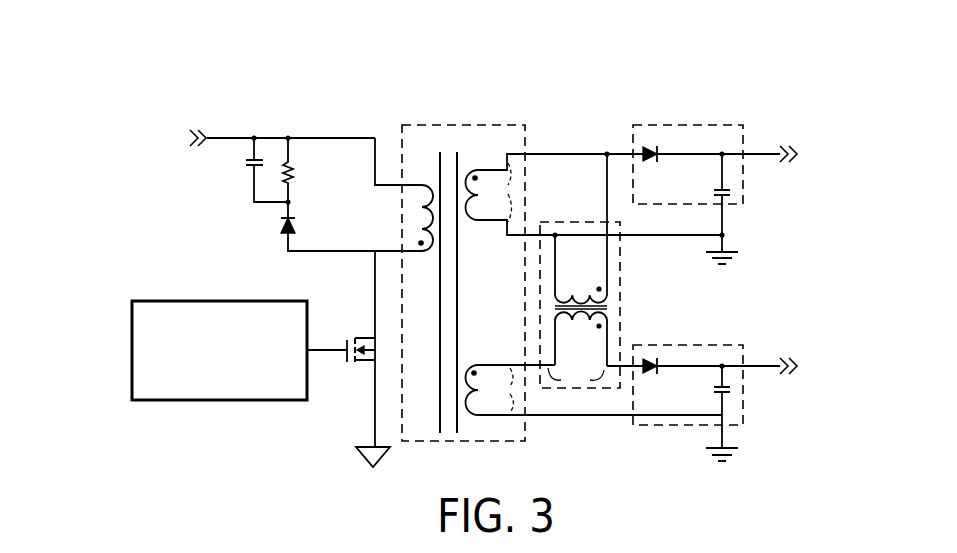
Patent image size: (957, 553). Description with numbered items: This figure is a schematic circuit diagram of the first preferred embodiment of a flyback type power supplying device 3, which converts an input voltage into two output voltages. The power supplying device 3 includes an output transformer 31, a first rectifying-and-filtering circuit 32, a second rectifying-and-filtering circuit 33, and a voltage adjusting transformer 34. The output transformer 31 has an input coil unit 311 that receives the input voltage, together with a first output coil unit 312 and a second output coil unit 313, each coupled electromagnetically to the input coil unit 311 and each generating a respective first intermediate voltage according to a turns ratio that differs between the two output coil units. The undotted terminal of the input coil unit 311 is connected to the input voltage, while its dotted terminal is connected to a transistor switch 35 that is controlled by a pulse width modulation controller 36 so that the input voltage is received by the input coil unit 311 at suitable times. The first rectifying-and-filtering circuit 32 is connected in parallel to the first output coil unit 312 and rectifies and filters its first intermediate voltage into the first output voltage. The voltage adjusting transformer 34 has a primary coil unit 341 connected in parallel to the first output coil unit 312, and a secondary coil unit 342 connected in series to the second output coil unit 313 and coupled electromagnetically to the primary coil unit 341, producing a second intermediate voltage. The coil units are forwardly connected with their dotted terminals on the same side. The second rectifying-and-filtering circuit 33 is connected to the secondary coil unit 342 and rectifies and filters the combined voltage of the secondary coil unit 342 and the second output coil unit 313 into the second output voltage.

The power supplying device 3 is at (580, 112).
The output transformer 31 is at (425, 123).
The input coil unit 311 is at (404, 211).
The first output coil unit 312 is at (478, 205).
The second output coil unit 313 is at (487, 368).
The first rectifying-and-filtering circuit 32 is at (718, 122).
The second rectifying-and-filtering circuit 33 is at (717, 342).
The voltage adjusting transformer 34 is at (585, 219).
The primary coil unit 341 is at (584, 295).
The secondary coil unit 342 is at (597, 343).
The transistor switch 35 is at (365, 338).
The pulse width modulation controller 36 is at (175, 300).